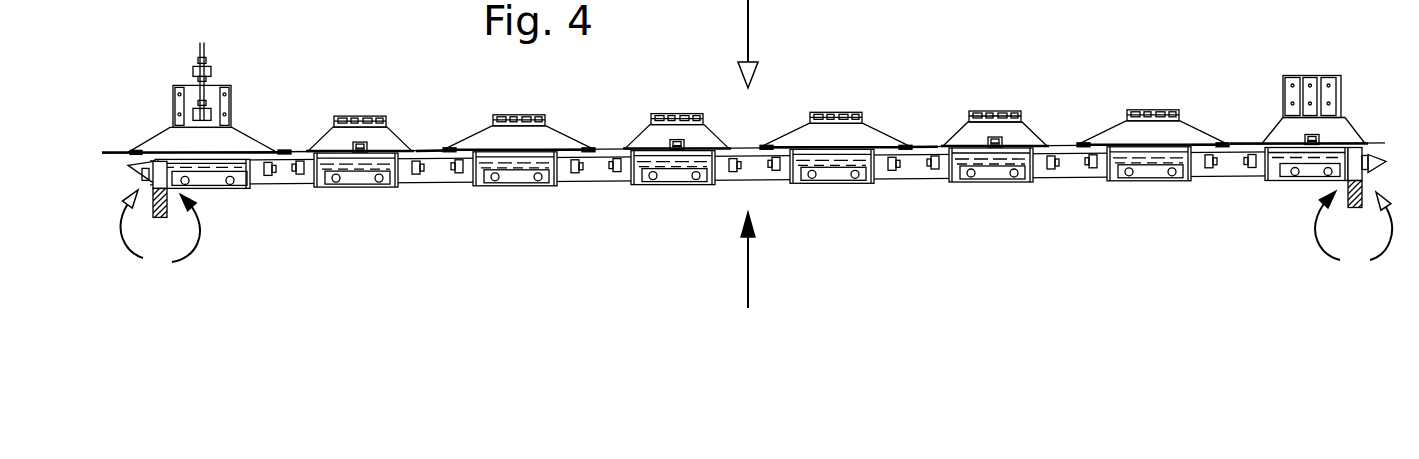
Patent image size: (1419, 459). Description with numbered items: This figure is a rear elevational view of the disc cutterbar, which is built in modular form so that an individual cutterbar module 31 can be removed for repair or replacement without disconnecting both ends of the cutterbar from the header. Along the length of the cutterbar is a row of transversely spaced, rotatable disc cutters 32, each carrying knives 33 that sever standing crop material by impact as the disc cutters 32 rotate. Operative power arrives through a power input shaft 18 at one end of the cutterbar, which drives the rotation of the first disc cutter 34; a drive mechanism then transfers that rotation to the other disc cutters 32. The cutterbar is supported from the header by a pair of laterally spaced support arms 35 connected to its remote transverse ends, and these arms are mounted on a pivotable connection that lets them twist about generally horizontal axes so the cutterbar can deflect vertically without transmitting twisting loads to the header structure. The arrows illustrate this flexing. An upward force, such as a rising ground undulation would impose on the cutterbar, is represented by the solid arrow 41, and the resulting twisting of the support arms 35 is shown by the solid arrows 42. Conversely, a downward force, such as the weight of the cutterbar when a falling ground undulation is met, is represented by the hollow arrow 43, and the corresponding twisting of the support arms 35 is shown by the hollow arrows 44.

The power input shaft 18 is at (236, 76).
The cutterbar module 31 is at (1150, 180).
The disc cutter 32 is at (552, 140).
The knife 33 is at (292, 150).
The first disc cutter 34 is at (210, 190).
The support arm 35 is at (158, 218).
The solid arrow 41 is at (748, 253).
The solid arrows 42 is at (202, 240).
The hollow arrow 43 is at (748, 18).
The hollow arrows 44 is at (130, 250).